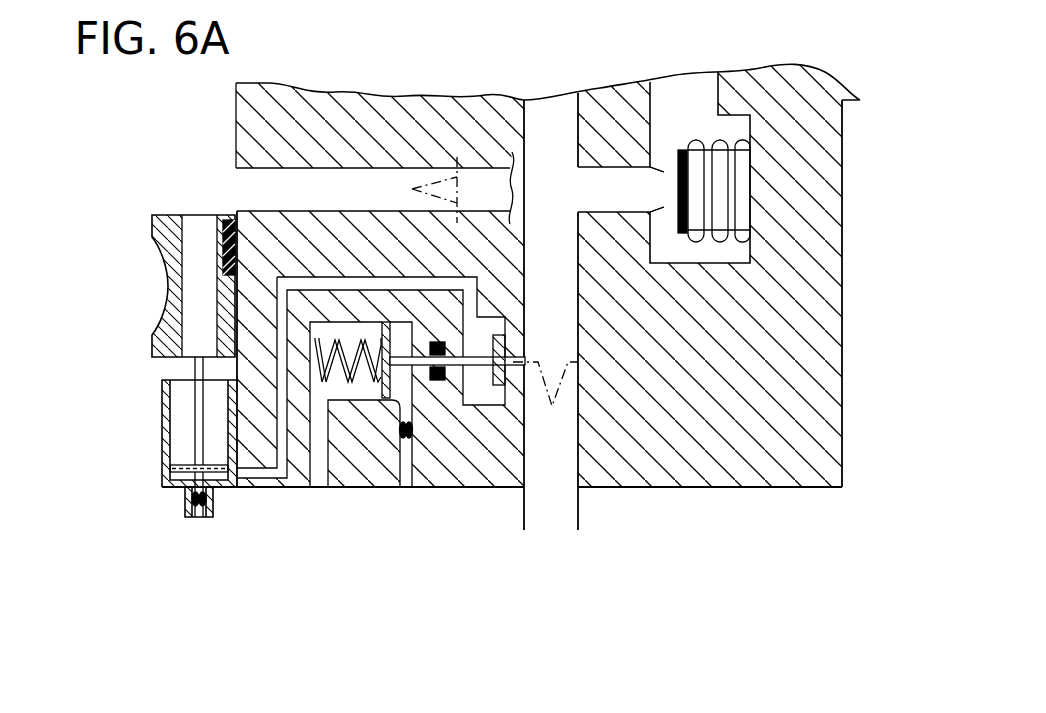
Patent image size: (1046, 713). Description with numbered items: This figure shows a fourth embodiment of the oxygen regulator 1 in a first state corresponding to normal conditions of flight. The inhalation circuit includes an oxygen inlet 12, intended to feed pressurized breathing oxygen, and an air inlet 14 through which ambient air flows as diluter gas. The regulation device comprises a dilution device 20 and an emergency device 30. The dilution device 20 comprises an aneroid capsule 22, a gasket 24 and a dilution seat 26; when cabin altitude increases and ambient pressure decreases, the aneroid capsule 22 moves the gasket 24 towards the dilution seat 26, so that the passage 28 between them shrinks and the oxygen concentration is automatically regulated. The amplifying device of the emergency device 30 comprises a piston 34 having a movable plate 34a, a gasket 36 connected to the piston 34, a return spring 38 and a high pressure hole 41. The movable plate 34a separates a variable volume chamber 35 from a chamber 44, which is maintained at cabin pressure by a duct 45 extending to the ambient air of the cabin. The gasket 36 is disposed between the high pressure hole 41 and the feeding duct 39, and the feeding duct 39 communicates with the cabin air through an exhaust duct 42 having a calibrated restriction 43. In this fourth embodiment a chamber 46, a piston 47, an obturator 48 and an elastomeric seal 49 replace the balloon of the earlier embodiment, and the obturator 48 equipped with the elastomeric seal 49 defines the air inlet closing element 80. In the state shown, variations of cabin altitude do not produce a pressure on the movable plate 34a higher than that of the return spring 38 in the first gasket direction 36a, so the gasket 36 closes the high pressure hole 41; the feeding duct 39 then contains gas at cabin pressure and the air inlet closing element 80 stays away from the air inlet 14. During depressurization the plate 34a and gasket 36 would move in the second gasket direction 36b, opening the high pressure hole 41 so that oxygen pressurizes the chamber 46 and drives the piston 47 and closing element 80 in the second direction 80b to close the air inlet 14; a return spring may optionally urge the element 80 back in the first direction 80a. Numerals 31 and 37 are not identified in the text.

The oxygen regulator 1 is at (836, 503).
The oxygen inlet 12 is at (562, 495).
The air inlet 14 is at (250, 188).
The dilution device 20 is at (764, 204).
The aneroid capsule 22 is at (722, 152).
The gasket 24 is at (686, 150).
The dilution seat 26 is at (660, 167).
The passage 28 is at (667, 152).
The emergency device 30 is at (108, 475).
The valve seat 31 is at (393, 402).
The piston 34 is at (497, 388).
The movable plate 34a is at (378, 403).
The variable volume chamber 35 is at (438, 382).
The gasket 36 is at (494, 318).
The first gasket direction 36a is at (470, 598).
The second gasket direction 36b is at (490, 598).
The piston 37 is at (398, 380).
The return spring 38 is at (346, 333).
The feeding duct 39 is at (284, 438).
The high pressure hole 41 is at (533, 400).
The exhaust duct 42 is at (198, 520).
The calibrated restriction 43 is at (192, 497).
The chamber 44 is at (348, 440).
The duct 45 is at (318, 432).
The chamber 46 is at (182, 470).
The piston 47 is at (198, 420).
The obturator 48 is at (172, 248).
The elastomeric seal 49 is at (220, 237).
The air inlet closing element 80 is at (112, 330).
The first direction 80a is at (65, 268).
The second direction 80b is at (65, 207).